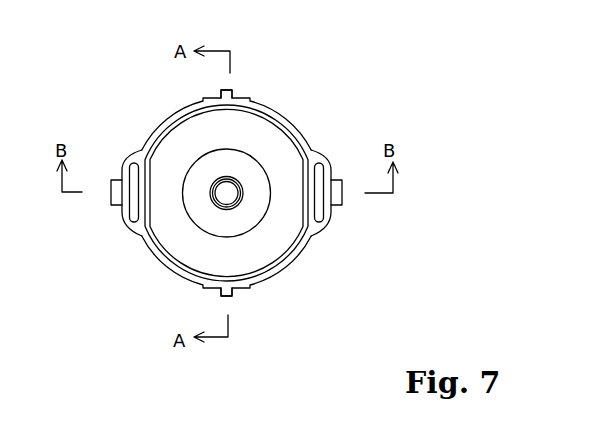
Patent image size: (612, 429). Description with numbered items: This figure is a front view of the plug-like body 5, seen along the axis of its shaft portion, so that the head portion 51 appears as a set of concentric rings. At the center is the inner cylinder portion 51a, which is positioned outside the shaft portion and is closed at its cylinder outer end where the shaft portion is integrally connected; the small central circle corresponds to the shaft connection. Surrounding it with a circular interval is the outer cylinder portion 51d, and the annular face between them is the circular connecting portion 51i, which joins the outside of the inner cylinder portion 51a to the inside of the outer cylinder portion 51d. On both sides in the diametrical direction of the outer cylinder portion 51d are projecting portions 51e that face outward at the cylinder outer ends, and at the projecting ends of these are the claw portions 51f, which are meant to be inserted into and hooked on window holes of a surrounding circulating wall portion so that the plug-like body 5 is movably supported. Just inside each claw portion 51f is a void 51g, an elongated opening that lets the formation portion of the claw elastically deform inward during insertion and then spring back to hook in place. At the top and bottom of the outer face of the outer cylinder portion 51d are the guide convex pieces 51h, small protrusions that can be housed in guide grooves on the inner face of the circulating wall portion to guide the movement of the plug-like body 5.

The plug-like body 5 is at (278, 108).
The head portion 51 is at (294, 130).
The inner cylinder portion 51a is at (208, 258).
The outer cylinder portion 51d is at (294, 261).
The projecting portions 51e is at (121, 217).
The claw portions 51f is at (111, 198).
The voids 51g is at (134, 162).
The guide convex pieces 51h is at (228, 90).
The circular connecting portion 51i is at (203, 217).